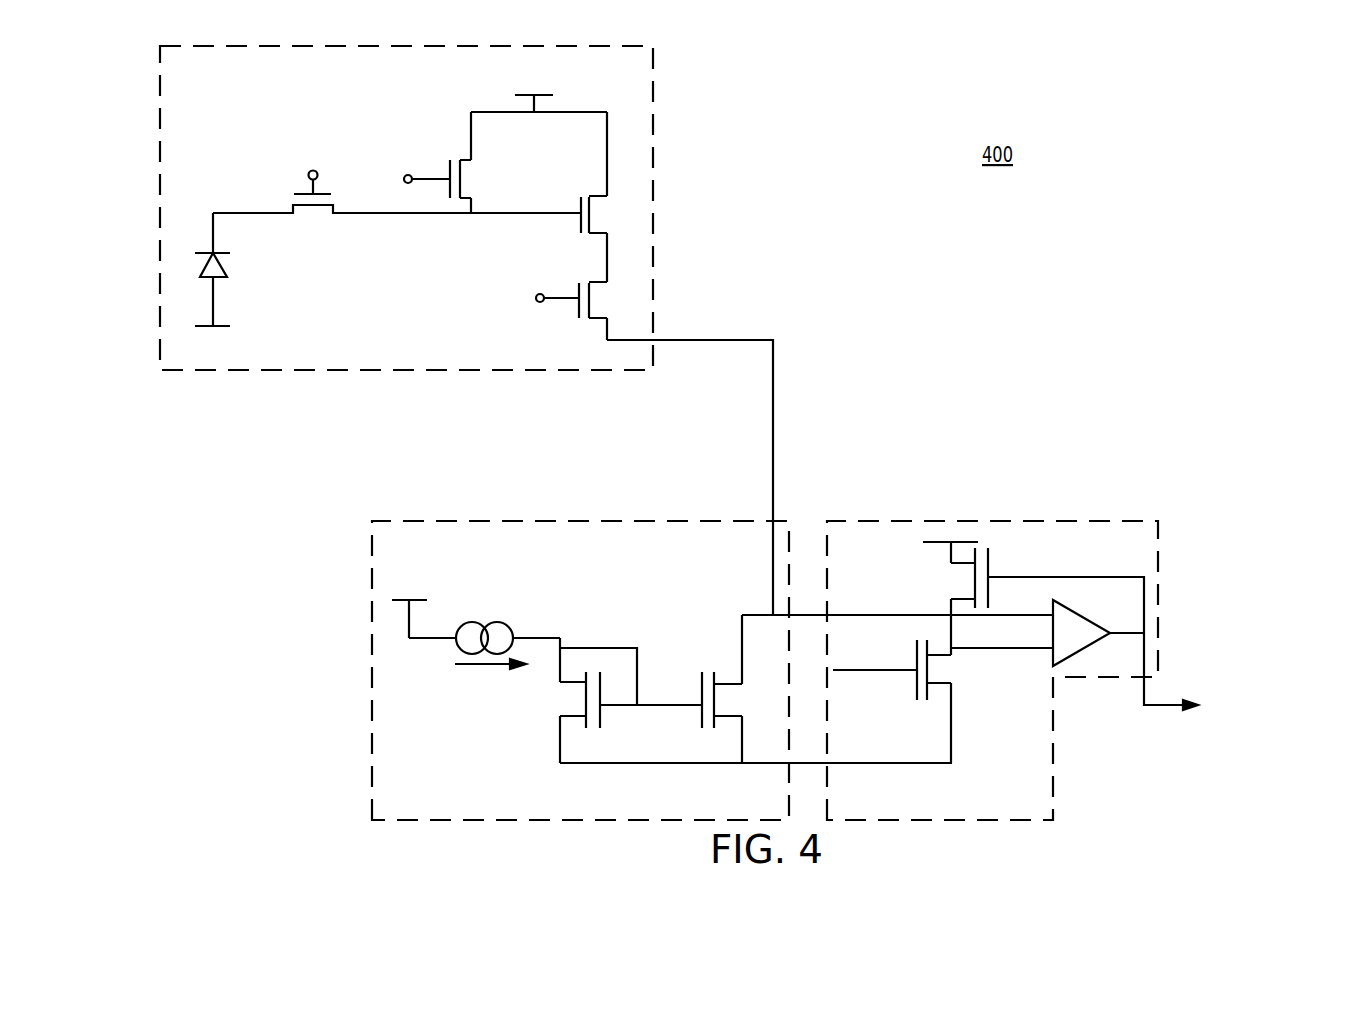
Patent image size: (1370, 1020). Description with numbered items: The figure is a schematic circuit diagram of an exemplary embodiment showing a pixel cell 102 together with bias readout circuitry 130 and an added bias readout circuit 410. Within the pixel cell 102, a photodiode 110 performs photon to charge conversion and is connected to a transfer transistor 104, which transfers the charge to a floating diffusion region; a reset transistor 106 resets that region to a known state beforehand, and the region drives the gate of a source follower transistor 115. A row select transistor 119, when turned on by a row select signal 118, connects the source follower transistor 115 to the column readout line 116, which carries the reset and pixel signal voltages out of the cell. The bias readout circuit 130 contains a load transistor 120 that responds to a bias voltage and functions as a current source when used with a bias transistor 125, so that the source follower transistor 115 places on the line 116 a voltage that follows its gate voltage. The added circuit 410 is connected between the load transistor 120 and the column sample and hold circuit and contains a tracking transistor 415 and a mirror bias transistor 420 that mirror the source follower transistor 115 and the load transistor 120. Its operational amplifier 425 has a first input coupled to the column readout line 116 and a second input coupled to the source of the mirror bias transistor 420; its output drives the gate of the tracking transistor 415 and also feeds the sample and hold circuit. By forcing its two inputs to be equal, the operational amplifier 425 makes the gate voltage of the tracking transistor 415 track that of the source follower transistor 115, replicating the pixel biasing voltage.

The pixel cell 102 is at (153, 187).
The transfer transistor 104 is at (292, 206).
The reset transistor 106 is at (460, 158).
The photodiode 110 is at (226, 258).
The source follower transistor 115 is at (584, 240).
The column readout line 116 is at (775, 361).
The row select signal 118 is at (562, 303).
The row select transistor 119 is at (596, 301).
The load transistor 120 is at (739, 680).
The bias transistor 125 is at (563, 705).
The bias readout circuit 130 is at (372, 540).
The bias readout circuit 410 is at (1093, 518).
The tracking transistor 415 is at (990, 567).
The mirror bias transistor 420 is at (917, 641).
The operational amplifier 425 is at (1080, 613).